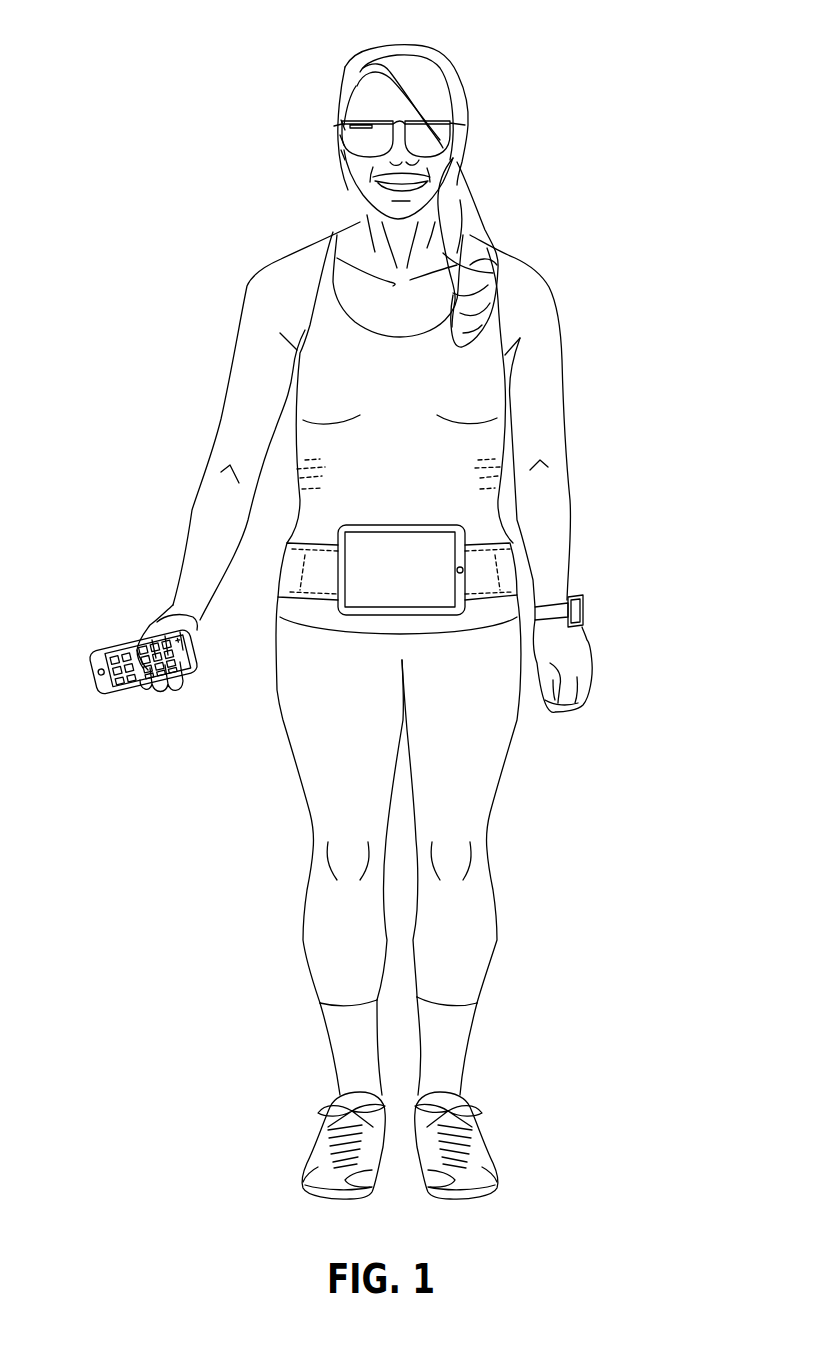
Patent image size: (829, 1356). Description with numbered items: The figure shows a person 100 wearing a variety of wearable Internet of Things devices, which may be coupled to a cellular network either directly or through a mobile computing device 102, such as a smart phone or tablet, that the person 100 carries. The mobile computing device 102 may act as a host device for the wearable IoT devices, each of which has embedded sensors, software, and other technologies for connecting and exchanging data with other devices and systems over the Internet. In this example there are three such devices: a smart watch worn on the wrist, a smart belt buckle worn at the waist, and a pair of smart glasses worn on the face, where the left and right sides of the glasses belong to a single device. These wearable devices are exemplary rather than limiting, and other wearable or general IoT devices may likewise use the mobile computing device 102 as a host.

The person 100 is at (433, 60).
The mobile computing device 102 is at (103, 697).